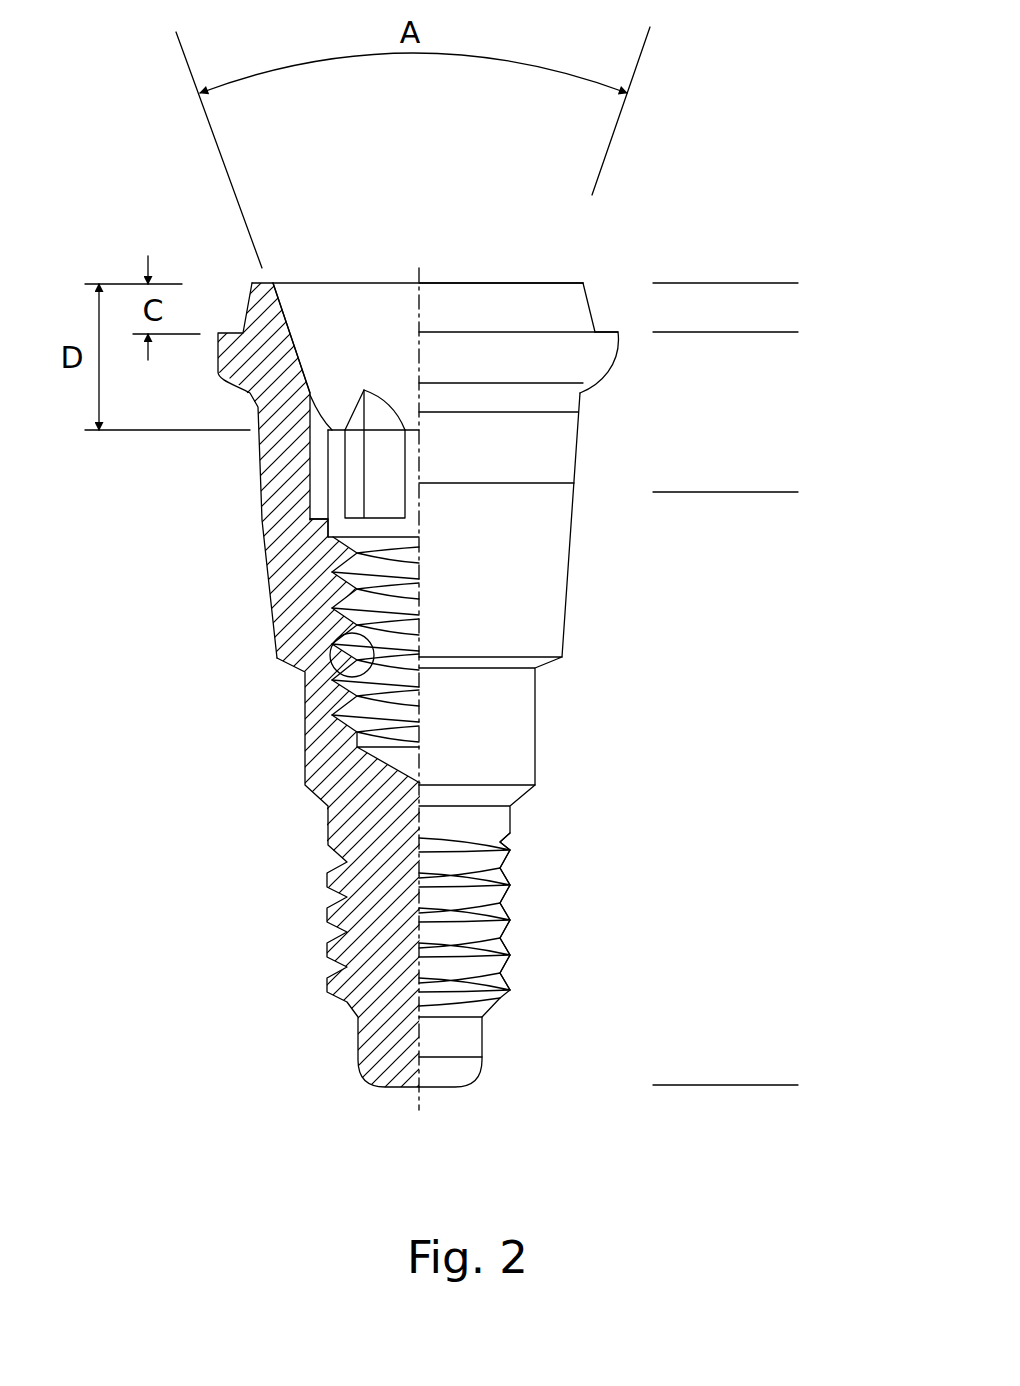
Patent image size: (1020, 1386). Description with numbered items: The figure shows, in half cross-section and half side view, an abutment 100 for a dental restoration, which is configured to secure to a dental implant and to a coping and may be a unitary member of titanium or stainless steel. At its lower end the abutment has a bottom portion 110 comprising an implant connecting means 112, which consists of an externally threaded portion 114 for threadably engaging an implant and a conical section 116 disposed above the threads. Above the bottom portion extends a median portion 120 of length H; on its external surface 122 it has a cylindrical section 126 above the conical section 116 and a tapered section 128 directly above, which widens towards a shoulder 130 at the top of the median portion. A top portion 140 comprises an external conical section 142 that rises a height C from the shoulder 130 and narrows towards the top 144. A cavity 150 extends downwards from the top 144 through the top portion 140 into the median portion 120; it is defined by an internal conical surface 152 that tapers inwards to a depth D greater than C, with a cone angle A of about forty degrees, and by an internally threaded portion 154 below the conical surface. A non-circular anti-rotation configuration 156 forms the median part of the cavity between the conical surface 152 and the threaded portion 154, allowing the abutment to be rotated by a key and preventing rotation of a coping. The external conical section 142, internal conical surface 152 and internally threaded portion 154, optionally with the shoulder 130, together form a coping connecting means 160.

The abutment 100 is at (177, 878).
The bottom portion 110 is at (833, 1085).
The implant connecting means 112 is at (572, 810).
The externally threaded portion 114 is at (510, 923).
The conical section 116 is at (567, 582).
The median portion 120 is at (833, 332).
The external surface 122 is at (585, 402).
The cylindrical section 126 is at (580, 443).
The tapered section 128 is at (612, 352).
The shoulder 130 is at (603, 325).
The top portion 140 is at (833, 283).
The external conical section 142 is at (593, 322).
The top 144 is at (463, 284).
The cavity 150 is at (383, 305).
The internal conical surface 152 is at (288, 300).
The internally threaded portion 154 is at (338, 633).
The non-circular anti-rotation configuration 156 is at (338, 503).
The coping connecting means 160 is at (228, 248).